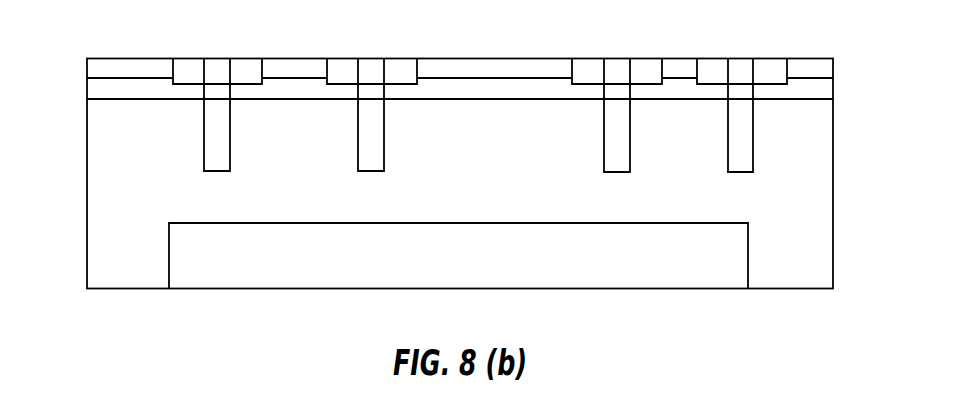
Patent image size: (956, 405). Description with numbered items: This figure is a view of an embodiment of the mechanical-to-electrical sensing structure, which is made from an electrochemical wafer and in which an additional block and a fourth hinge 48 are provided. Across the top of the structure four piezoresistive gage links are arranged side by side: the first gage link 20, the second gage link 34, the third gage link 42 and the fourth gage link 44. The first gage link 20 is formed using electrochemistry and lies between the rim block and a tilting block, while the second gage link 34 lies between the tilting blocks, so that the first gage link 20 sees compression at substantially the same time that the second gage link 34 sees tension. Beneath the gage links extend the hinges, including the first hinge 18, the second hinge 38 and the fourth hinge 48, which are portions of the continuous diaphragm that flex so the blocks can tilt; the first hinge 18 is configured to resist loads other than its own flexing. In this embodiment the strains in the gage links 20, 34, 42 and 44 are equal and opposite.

The first hinge 18 is at (217, 150).
The first gage link 20 is at (217, 68).
The second gage link 34 is at (371, 68).
The second hinge 38 is at (617, 150).
The third gage link 42 is at (618, 68).
The fourth gage link 44 is at (742, 68).
The fourth hinge 48 is at (371, 150).